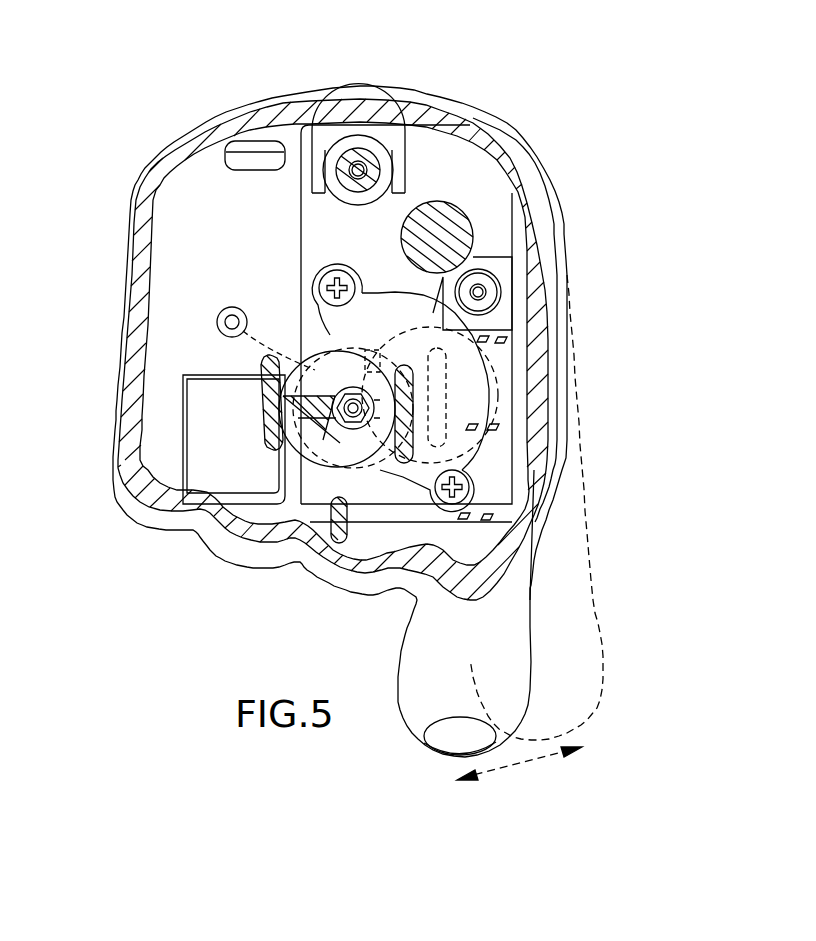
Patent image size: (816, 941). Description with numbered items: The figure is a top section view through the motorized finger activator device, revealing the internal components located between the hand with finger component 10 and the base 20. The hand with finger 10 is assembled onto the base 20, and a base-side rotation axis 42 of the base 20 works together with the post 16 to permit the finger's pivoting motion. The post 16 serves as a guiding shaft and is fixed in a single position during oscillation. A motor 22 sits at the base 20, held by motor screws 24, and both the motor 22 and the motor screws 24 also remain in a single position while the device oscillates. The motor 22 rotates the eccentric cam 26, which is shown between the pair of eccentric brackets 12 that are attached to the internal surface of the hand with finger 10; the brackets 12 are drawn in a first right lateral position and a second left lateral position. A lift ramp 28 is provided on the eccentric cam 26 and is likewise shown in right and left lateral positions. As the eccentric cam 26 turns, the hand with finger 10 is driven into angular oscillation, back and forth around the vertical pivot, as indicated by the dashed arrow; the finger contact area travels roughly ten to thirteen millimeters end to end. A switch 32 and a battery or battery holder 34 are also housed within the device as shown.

The hand with finger component 10 is at (127, 300).
The eccentric brackets 12 is at (228, 310).
The post 16 is at (380, 162).
The base 20 is at (205, 240).
The motor 22 is at (462, 266).
The motor screws 24 is at (332, 285).
The eccentric cam 26 is at (333, 372).
The lift ramp 28 is at (480, 335).
The switch 32 is at (460, 220).
The battery/battery holder 34 is at (193, 460).
The rotation axis 42 is at (320, 153).